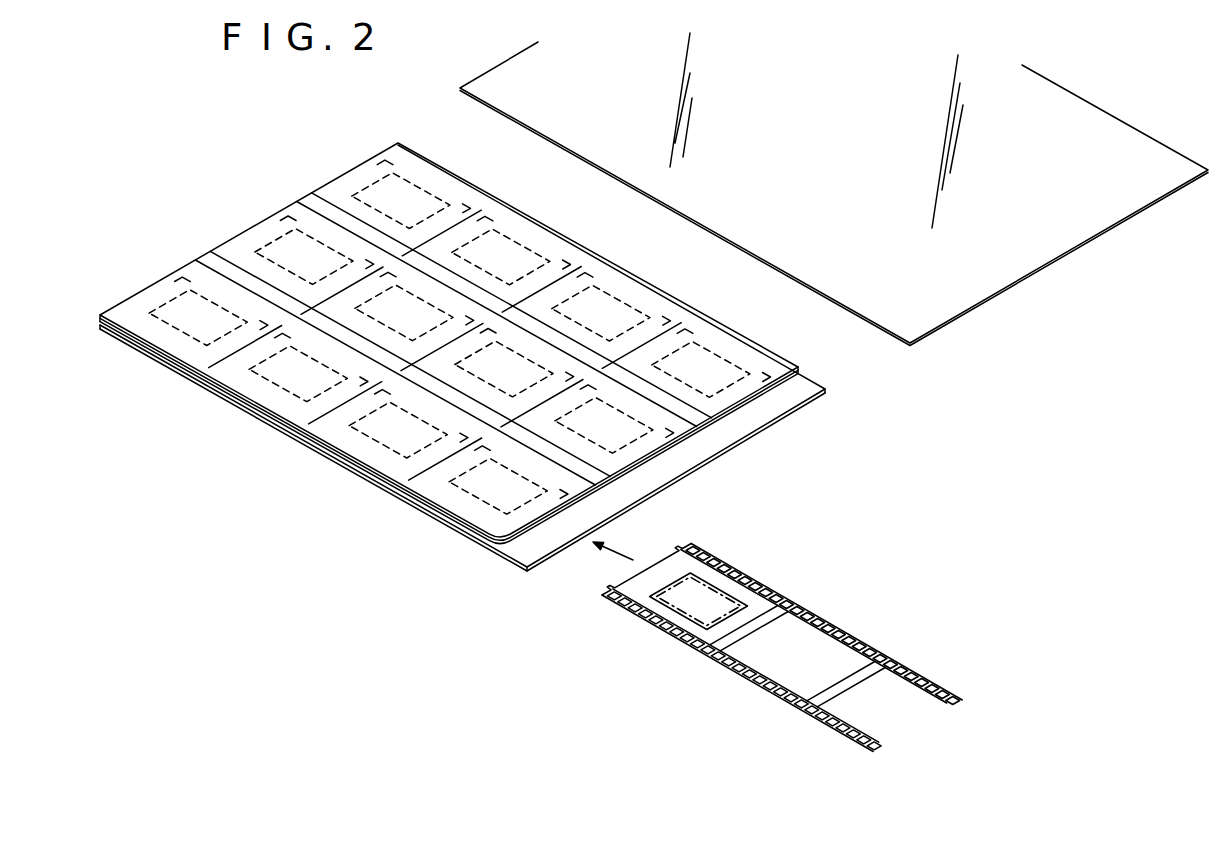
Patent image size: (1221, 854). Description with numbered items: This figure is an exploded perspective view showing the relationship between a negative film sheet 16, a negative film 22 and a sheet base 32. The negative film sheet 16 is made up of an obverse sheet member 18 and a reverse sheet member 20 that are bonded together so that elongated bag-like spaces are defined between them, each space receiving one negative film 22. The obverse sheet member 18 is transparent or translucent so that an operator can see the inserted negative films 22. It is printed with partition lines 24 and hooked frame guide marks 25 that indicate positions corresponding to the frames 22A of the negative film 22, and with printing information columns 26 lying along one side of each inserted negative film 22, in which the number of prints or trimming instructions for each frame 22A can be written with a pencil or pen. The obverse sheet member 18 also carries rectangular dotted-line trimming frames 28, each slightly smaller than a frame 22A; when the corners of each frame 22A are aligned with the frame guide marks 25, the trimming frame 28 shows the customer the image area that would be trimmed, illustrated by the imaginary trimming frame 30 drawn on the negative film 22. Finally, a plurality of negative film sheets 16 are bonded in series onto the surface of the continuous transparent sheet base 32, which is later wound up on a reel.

The negative film sheet 16 is at (332, 493).
The obverse sheet member 18 is at (799, 366).
The reverse sheet member 20 is at (806, 398).
The negative film 22 is at (863, 645).
The frame 22A is at (757, 607).
The partition lines 24 is at (637, 347).
The frame guide marks 25 is at (187, 277).
The printing information column 26 is at (327, 215).
The trimming frame 28 is at (514, 249).
The imaginary trimming frame 30 is at (680, 613).
The sheet base 32 is at (1095, 222).